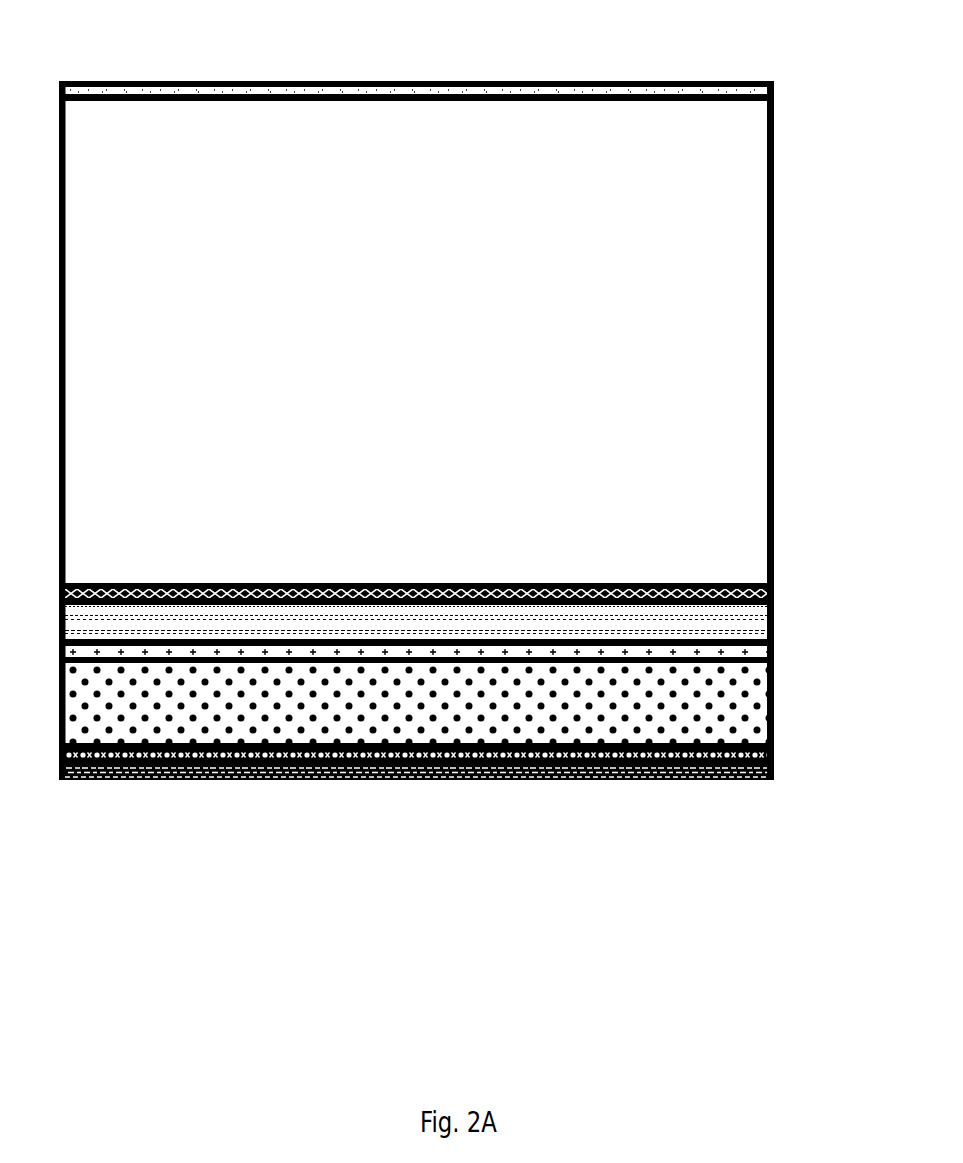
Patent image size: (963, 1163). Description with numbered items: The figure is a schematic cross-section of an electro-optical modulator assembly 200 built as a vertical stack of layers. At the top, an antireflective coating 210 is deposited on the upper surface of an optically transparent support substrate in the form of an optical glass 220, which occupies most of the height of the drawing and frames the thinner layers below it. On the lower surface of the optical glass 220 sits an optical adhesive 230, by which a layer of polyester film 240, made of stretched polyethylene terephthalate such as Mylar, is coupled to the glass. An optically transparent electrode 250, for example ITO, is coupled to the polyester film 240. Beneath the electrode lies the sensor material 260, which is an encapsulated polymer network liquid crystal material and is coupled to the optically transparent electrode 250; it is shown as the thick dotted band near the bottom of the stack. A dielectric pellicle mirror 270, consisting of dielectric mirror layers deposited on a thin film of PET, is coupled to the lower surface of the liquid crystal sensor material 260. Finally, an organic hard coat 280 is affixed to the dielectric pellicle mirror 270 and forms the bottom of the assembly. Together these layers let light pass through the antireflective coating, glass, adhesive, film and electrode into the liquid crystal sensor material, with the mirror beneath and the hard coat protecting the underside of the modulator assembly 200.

The electro-optical modulator assembly 200 is at (84, 36).
The antireflective coating 210 is at (795, 92).
The optical glass 220 is at (795, 333).
The optical adhesive 230 is at (795, 593).
The polyester film 240 is at (795, 622).
The optically transparent electrode 250 is at (795, 652).
The sensor material 260 is at (795, 696).
The dielectric pellicle mirror 270 is at (795, 755).
The organic hard coat 280 is at (792, 779).